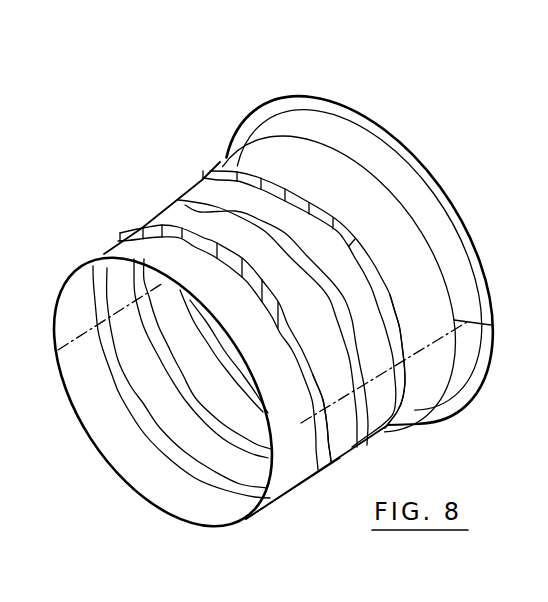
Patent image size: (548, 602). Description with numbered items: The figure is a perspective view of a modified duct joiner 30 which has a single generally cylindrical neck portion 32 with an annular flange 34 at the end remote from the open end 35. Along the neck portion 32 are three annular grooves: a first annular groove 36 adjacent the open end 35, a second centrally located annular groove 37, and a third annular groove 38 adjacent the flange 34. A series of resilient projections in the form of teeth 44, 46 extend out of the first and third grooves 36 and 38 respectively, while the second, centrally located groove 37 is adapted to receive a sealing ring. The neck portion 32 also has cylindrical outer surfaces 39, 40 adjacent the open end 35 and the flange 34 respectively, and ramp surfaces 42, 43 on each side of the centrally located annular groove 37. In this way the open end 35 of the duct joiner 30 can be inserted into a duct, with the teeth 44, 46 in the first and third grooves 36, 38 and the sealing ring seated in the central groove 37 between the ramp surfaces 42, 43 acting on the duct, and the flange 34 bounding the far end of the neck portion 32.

The duct joiner 30 is at (347, 89).
The neck portion 32 is at (147, 194).
The annular flange 34 is at (257, 128).
The open end 35 is at (150, 500).
The first annular groove 36 is at (314, 462).
The second annular groove 37 is at (355, 448).
The third annular groove 38 is at (403, 399).
The cylindrical outer surface 39 is at (110, 252).
The cylindrical outer surface 40 is at (394, 230).
The ramp surface 42 is at (335, 465).
The ramp surface 43 is at (364, 436).
The teeth 44 is at (176, 228).
The teeth 46 is at (344, 226).